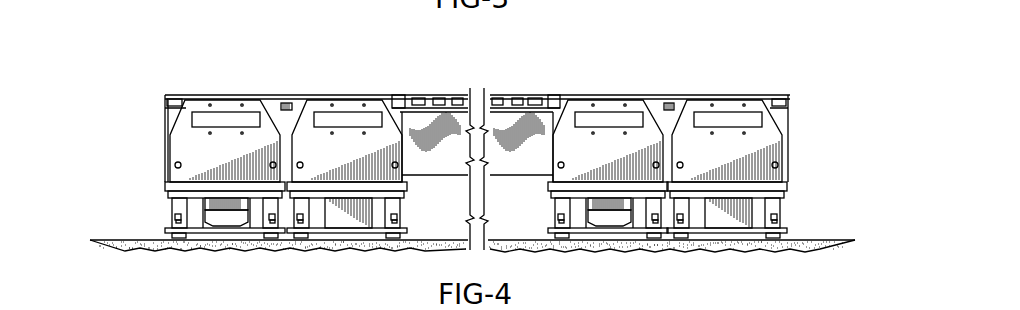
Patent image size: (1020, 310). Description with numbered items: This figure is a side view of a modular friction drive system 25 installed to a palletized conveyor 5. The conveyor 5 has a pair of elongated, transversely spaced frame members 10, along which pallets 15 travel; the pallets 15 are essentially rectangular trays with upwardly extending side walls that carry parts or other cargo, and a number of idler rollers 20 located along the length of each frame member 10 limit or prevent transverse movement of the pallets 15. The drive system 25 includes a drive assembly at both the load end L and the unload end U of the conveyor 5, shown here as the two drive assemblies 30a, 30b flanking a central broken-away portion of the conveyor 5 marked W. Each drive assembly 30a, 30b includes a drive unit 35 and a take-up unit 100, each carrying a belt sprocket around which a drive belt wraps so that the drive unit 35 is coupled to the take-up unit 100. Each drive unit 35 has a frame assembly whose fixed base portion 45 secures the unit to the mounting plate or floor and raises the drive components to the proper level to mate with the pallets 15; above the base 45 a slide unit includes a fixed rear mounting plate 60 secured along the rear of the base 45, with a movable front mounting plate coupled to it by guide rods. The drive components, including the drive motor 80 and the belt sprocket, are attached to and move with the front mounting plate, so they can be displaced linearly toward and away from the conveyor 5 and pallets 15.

The palletized conveyor 5 is at (148, 131).
The frame member 10 is at (436, 156).
The pallet 15 is at (506, 95).
The idler roller 20 is at (532, 99).
The modular friction drive system 25 is at (160, 76).
The drive assembly 30a is at (300, 86).
The drive assembly 30b is at (683, 86).
The drive unit 35 is at (218, 100).
The fixed base portion 45 is at (761, 270).
The rear mounting plate 60 is at (215, 153).
The drive motor 80 is at (610, 285).
The take-up unit 100 is at (350, 100).
The wall W is at (432, 94).
The load end L is at (150, 98).
The unload end U is at (802, 100).